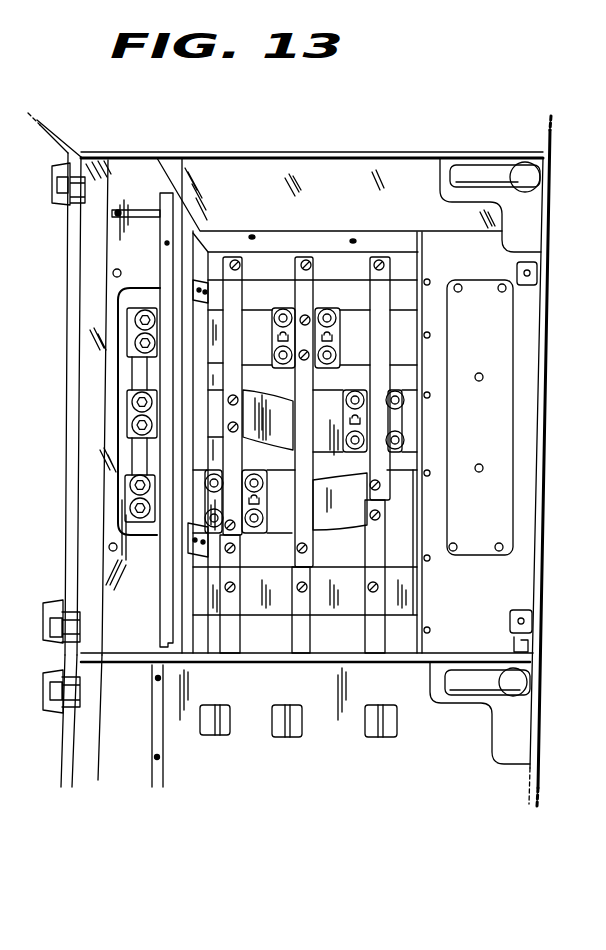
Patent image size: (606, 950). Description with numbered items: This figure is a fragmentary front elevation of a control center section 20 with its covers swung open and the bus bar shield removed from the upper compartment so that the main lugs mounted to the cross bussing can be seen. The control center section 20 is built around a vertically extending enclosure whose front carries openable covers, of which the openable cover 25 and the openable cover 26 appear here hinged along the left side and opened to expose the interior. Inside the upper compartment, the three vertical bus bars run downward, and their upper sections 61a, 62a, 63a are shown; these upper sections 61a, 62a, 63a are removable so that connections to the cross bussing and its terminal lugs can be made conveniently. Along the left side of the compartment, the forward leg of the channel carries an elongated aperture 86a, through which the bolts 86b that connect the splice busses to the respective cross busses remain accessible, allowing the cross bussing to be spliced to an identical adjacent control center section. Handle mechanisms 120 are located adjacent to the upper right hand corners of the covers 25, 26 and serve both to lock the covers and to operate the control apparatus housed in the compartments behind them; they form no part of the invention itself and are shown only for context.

The control center section 20 is at (555, 470).
The openable cover 25 is at (53, 232).
The openable cover 26 is at (38, 754).
The upper section of bus bar 61a is at (235, 257).
The upper section of bus bar 62a is at (307, 257).
The upper section of bus bar 63a is at (381, 257).
The elongated aperture 86a is at (137, 302).
The bolts 86b is at (137, 348).
The handle mechanism 120 is at (525, 227).